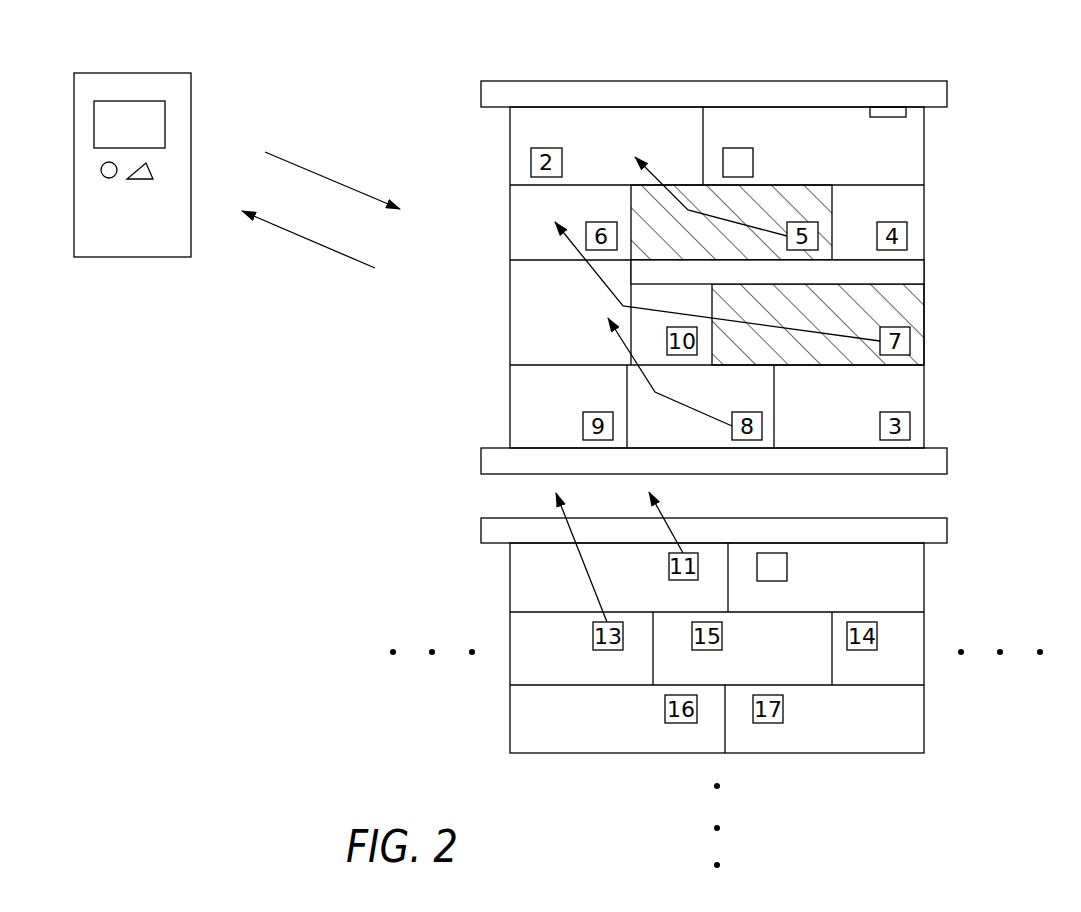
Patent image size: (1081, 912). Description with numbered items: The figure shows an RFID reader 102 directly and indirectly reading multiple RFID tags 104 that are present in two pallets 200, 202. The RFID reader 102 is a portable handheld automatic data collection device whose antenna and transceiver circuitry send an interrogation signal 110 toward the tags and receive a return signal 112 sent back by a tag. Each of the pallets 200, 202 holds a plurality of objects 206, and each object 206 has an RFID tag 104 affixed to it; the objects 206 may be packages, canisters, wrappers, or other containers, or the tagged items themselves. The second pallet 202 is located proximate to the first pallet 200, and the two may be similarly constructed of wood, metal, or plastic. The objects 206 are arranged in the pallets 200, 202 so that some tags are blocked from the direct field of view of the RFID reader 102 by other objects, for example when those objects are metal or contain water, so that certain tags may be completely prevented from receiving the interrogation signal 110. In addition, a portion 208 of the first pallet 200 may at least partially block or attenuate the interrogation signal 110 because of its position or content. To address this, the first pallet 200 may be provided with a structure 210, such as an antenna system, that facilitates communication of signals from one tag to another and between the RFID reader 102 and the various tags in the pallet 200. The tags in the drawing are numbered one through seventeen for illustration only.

The RFID reader 102 is at (148, 73).
The RFID tag 104 is at (753, 159).
The interrogation signal 110 is at (305, 168).
The return signal 112 is at (327, 250).
The pallet 200 is at (807, 76).
The pallet 202 is at (947, 530).
The object 206 is at (924, 167).
The portion of the pallet 208 is at (913, 272).
The structure 210 is at (887, 117).